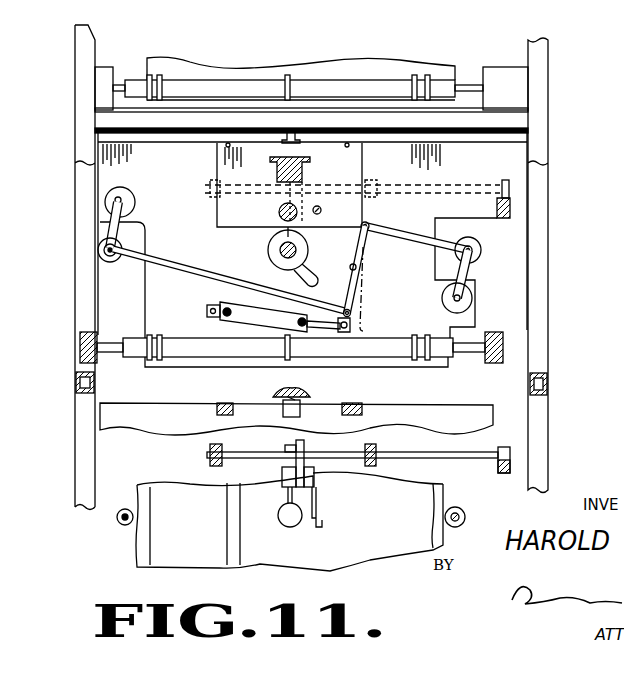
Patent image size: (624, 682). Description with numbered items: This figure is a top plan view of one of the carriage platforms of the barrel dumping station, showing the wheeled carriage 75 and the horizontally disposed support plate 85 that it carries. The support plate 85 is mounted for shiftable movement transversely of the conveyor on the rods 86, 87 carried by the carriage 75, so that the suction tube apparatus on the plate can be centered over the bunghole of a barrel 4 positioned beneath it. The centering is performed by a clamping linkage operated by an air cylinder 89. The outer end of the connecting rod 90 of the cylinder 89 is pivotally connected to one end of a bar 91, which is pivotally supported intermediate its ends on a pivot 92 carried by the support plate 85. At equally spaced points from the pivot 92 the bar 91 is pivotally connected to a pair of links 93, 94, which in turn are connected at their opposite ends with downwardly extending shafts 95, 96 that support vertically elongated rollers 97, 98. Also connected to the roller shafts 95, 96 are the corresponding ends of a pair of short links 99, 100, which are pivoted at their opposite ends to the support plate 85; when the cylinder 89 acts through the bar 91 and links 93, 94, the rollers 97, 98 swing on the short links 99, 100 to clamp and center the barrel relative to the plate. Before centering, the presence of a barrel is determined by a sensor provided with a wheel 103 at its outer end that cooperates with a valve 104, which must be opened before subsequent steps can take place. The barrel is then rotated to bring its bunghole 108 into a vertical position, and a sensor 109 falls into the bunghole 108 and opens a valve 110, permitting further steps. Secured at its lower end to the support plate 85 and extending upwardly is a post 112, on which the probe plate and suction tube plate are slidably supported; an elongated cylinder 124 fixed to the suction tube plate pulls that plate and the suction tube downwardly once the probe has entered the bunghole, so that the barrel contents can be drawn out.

The barrel 4 is at (135, 558).
The wheeled carriage 75 is at (552, 93).
The support plate 85 is at (182, 186).
The rod 86 is at (465, 83).
The rod 87 is at (478, 180).
The air cylinder 89 is at (263, 322).
The connecting rod 90 is at (323, 328).
The bar 91 is at (352, 295).
The pivot 92 is at (356, 267).
The link 93 is at (188, 275).
The link 94 is at (422, 237).
The shaft 95 is at (100, 247).
The shaft 96 is at (477, 262).
The roller 97 is at (97, 258).
The roller 98 is at (478, 250).
The short link 99 is at (112, 232).
The short link 100 is at (473, 273).
The wheel 103 is at (315, 523).
The valve 104 is at (323, 490).
The bunghole 108 is at (282, 527).
The sensor 109 is at (287, 497).
The valve 110 is at (303, 447).
The post 112 is at (302, 173).
The cylinder 124 is at (268, 252).